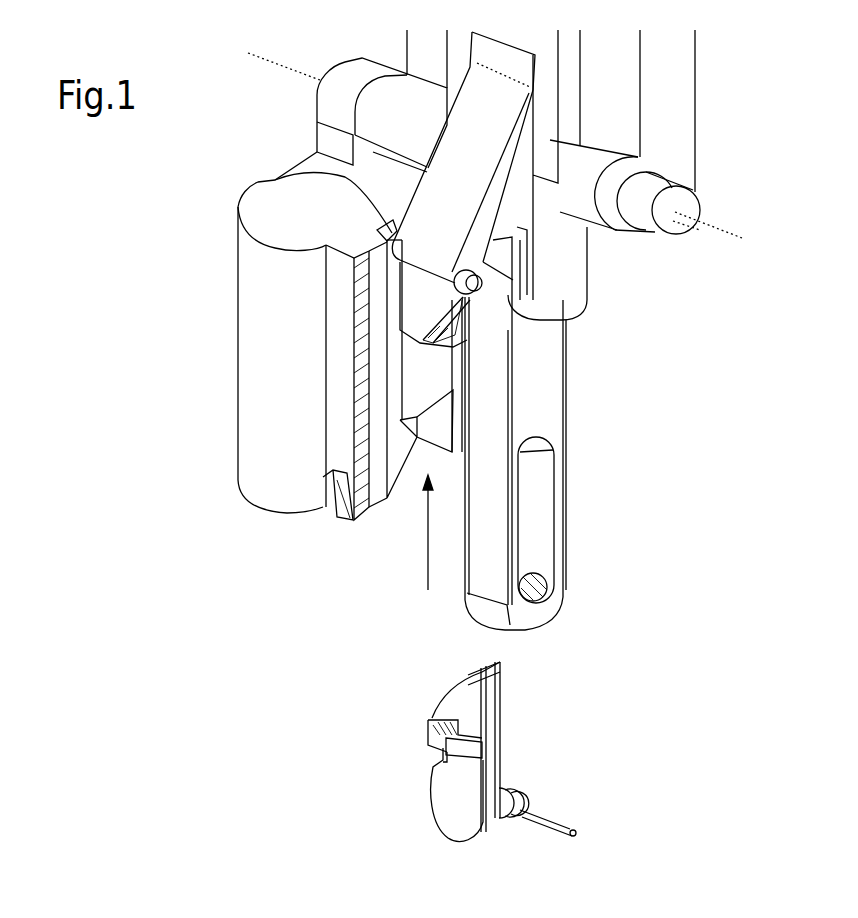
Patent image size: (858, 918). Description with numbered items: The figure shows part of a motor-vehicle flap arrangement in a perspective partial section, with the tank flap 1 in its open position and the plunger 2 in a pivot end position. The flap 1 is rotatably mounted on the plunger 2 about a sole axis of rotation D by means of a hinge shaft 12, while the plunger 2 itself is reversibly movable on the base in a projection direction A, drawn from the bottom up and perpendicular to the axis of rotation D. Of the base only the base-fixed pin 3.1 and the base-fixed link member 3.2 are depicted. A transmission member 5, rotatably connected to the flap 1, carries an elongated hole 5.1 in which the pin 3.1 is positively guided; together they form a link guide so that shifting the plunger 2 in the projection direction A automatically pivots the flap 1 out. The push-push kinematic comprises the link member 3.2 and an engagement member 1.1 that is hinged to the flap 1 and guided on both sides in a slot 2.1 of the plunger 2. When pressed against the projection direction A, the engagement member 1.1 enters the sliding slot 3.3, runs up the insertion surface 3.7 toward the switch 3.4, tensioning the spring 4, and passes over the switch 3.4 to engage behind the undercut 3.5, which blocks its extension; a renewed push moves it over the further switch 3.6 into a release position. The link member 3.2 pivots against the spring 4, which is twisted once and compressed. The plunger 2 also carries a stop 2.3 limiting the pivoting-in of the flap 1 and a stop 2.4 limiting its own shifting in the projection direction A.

The tank flap 1 is at (670, 100).
The engagement member 1.1 is at (443, 348).
The plunger 2 is at (278, 382).
The slot 2.1 is at (292, 165).
The stop 2.3 is at (346, 214).
The stop 2.4 is at (330, 482).
The transmission member 5 is at (537, 397).
The elongated hole 5.1 is at (533, 517).
The base-fixed pin 3.1 is at (543, 597).
The link member 3.2 is at (513, 723).
The sliding slot 3.3 is at (475, 688).
The switch 3.4 is at (433, 767).
The undercut 3.5 is at (428, 720).
The further switch 3.6 is at (482, 740).
The insertion surface 3.7 is at (445, 718).
The spring 4 is at (555, 822).
The hinge shaft 12 is at (687, 227).
The axis of rotation D is at (707, 223).
The projection direction A is at (416, 532).